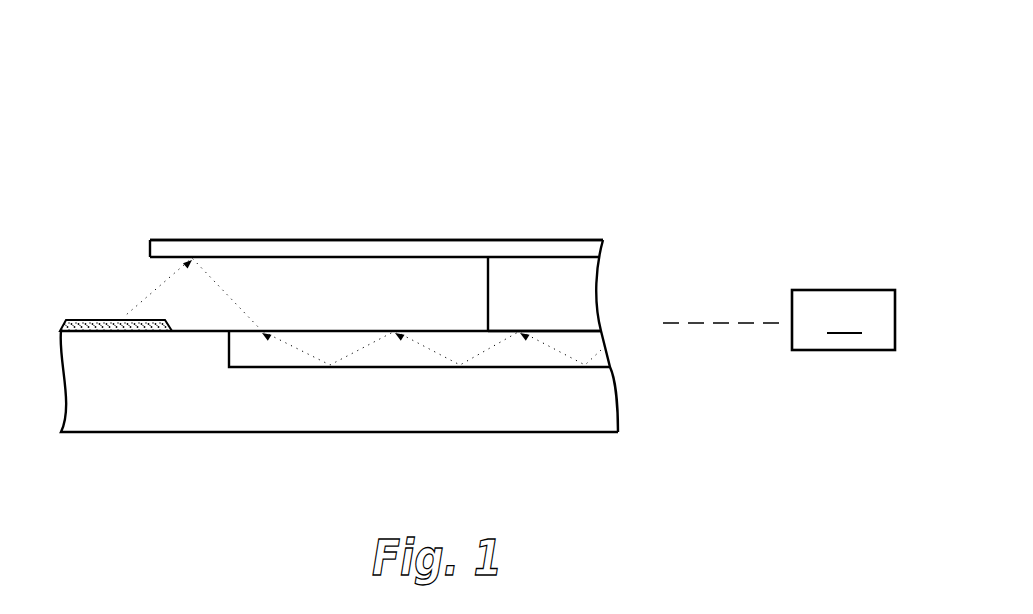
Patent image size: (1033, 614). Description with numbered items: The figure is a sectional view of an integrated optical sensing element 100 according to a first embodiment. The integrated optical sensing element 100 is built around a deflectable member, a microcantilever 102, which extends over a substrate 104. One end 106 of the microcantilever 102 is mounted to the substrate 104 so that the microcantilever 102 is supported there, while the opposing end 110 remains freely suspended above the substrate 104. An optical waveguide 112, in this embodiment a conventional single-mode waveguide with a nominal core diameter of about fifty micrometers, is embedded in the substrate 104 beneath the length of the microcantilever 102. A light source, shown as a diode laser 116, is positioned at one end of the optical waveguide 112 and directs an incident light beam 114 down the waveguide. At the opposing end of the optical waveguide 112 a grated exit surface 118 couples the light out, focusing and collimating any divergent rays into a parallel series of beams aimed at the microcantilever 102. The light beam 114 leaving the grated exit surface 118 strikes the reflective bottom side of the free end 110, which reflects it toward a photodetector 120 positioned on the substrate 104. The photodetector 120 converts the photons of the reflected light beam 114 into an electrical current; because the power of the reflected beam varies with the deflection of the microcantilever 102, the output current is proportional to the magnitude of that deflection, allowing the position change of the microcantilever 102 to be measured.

The integrated optical sensing element 100 is at (584, 93).
The microcantilever 102 is at (398, 239).
The substrate 104 is at (573, 413).
The end of the microcantilever 106 is at (529, 228).
The opposing end of the microcantilever 110 is at (167, 233).
The optical waveguide 112 is at (387, 367).
The light beam 114 is at (623, 342).
The diode laser 116 is at (143, 297).
The grated exit surface 118 is at (254, 307).
The photodetector 120 is at (67, 317).